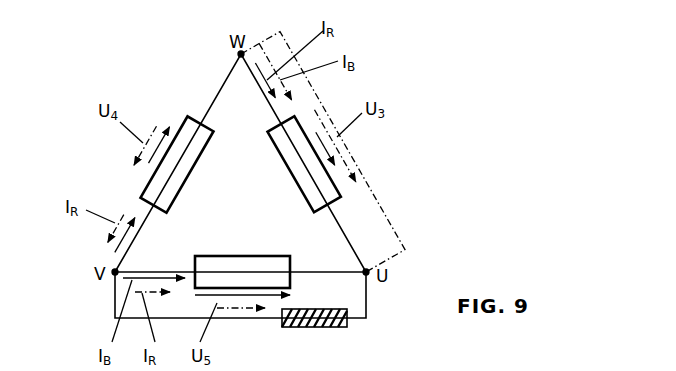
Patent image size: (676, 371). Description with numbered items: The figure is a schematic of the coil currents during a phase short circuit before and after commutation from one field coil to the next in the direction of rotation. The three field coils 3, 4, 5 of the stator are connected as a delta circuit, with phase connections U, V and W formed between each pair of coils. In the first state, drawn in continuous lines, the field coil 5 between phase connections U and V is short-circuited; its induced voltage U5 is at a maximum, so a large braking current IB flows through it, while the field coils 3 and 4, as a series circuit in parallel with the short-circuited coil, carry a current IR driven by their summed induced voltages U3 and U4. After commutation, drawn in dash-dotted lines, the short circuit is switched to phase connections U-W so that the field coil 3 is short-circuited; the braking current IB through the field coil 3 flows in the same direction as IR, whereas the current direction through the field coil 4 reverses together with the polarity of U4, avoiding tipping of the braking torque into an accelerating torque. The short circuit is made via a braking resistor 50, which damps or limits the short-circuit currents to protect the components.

The field coil 3 is at (335, 201).
The field coil 4 is at (198, 132).
The field coil 5 is at (248, 266).
The braking resistor 50 is at (310, 327).